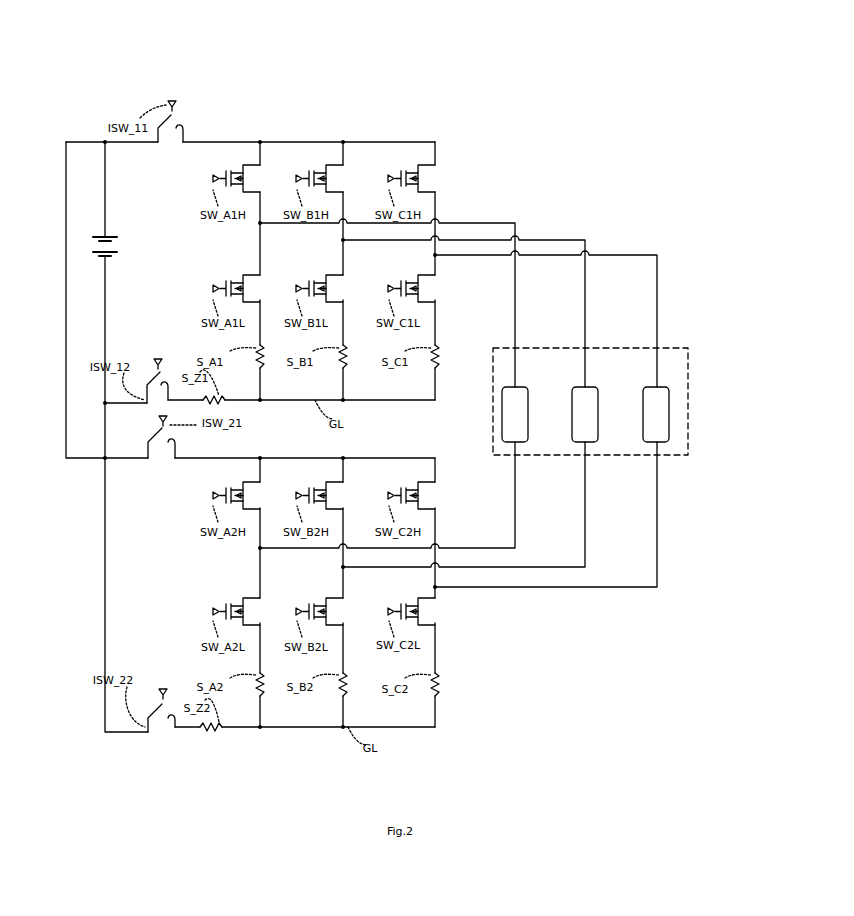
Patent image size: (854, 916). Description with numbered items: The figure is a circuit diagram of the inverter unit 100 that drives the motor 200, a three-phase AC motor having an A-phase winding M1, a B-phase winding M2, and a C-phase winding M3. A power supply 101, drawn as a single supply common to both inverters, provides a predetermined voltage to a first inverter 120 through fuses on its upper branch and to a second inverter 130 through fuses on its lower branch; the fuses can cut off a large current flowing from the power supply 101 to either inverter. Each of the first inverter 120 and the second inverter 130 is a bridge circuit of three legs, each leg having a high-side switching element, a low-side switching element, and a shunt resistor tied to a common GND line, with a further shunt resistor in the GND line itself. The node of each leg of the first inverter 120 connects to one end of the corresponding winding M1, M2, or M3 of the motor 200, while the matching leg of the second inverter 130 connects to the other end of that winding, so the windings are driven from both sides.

The inverter unit 100 is at (394, 90).
The power supply 101 is at (118, 250).
The first inverter 120 is at (449, 181).
The second inverter 130 is at (451, 532).
The motor 200 is at (609, 420).
The A-phase winding M1 is at (528, 386).
The B-phase winding M2 is at (598, 386).
The C-phase winding M3 is at (669, 386).